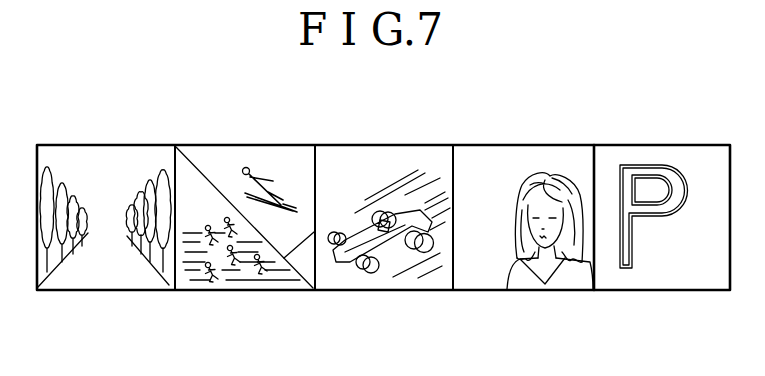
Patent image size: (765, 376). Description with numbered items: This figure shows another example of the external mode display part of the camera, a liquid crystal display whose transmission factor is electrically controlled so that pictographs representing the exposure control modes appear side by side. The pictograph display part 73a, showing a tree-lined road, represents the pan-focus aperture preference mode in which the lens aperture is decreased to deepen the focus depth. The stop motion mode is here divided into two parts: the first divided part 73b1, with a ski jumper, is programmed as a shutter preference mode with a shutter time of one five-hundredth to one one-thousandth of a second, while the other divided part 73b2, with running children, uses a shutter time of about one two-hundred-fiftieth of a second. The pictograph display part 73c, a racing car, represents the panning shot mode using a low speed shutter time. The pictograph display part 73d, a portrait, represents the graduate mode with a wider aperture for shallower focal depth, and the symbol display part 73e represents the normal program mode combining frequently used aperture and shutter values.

The pictograph display part 73a is at (108, 145).
The first divided part 73b1 is at (243, 145).
The other divided part 73b2 is at (232, 293).
The pictograph display part 73c is at (380, 145).
The pictograph display part 73d is at (520, 145).
The pictograph or symbol display part 73e is at (658, 145).